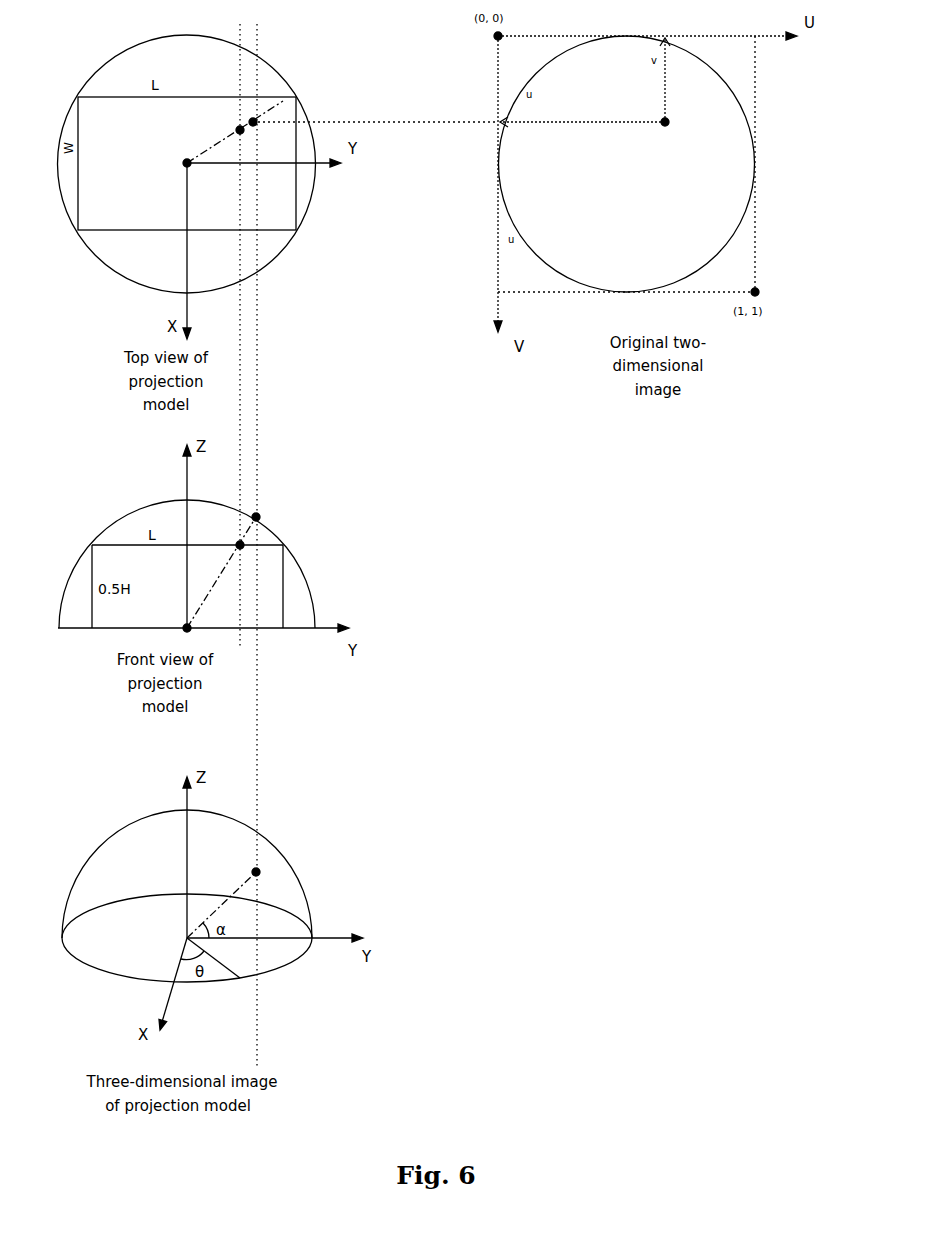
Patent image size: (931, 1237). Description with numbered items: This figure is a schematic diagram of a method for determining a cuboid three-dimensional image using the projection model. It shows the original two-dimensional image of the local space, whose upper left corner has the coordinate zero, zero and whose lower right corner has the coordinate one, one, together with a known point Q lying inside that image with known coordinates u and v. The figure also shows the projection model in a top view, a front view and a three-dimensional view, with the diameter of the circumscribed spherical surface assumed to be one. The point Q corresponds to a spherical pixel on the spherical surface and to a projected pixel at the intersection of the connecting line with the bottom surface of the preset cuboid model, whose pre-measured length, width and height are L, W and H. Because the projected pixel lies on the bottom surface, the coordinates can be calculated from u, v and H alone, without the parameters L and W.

The point in the original two-dimensional image Q is at (592, 95).